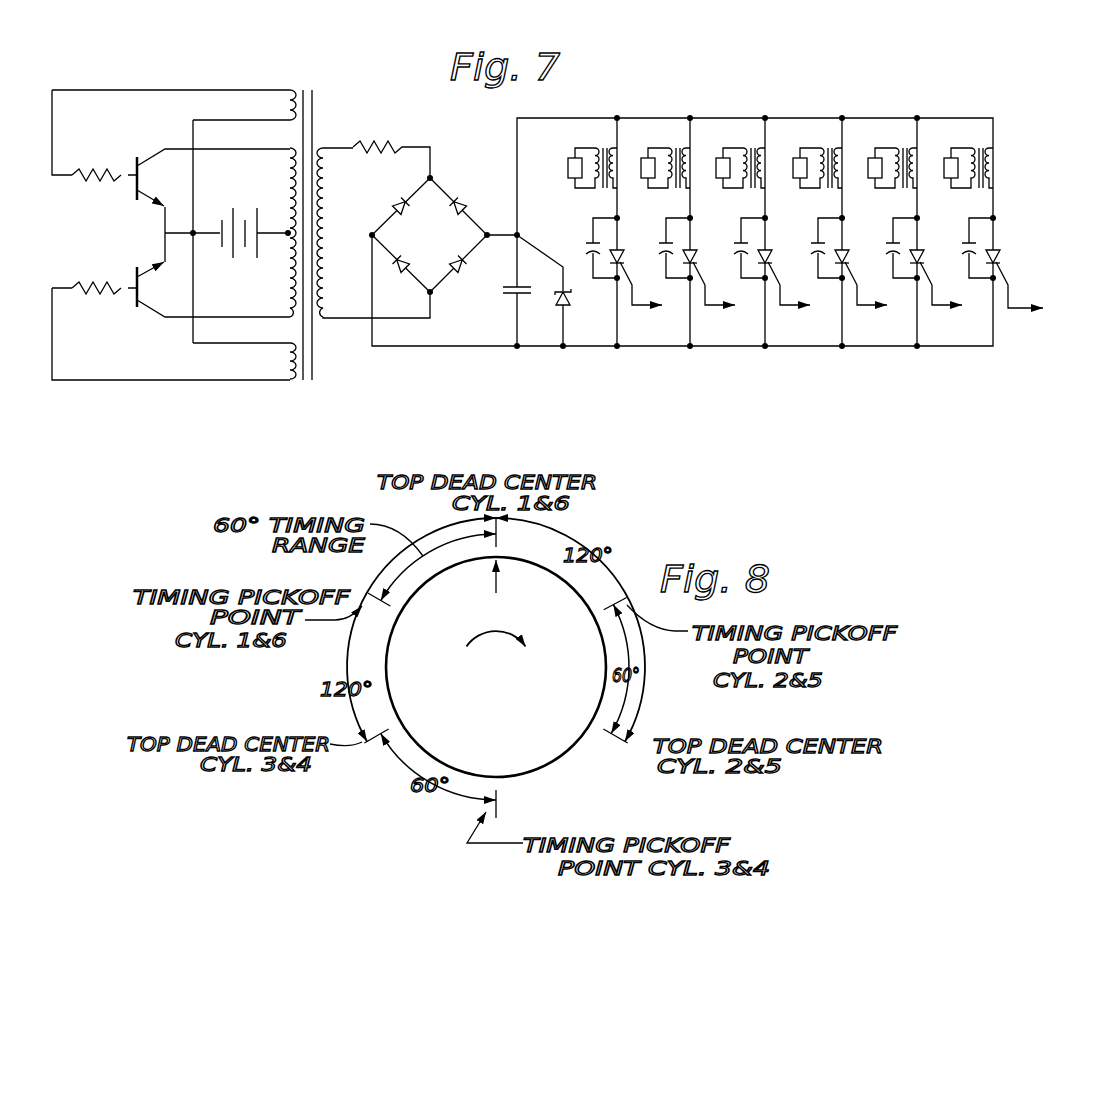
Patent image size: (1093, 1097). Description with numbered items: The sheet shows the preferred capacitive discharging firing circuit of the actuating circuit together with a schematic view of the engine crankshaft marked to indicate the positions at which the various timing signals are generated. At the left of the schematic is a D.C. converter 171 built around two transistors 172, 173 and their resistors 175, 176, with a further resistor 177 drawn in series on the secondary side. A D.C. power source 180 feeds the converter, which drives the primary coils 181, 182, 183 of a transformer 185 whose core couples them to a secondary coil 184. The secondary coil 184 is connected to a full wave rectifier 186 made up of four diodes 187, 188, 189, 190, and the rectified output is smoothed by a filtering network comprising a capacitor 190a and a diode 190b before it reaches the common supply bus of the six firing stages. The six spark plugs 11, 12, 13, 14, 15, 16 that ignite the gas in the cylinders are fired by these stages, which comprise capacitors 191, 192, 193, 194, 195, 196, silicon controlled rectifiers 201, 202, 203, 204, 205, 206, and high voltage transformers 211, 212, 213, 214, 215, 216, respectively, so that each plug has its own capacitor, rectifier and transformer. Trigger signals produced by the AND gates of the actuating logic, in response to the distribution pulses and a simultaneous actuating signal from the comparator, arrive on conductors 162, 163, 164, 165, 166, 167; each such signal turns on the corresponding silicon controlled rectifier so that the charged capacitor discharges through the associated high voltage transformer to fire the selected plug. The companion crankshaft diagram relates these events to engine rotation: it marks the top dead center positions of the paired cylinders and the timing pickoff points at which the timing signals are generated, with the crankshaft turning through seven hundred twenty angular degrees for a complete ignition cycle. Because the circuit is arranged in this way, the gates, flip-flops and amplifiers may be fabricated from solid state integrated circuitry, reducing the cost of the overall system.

The spark plug 11 is at (565, 171).
The spark plug 12 is at (643, 180).
The spark plug 13 is at (718, 180).
The spark plug 14 is at (795, 180).
The spark plug 15 is at (872, 180).
The spark plug 16 is at (948, 180).
The conductor 162 is at (780, 310).
The conductor 163 is at (632, 310).
The conductor 164 is at (932, 310).
The conductor 165 is at (857, 310).
The conductor 166 is at (1040, 305).
The conductor 167 is at (696, 266).
The D.C. converter 171 is at (331, 220).
The transistor 172 is at (133, 162).
The transistor 173 is at (133, 283).
The resistor 175 is at (92, 172).
The resistor 176 is at (108, 300).
The resistor 177 is at (370, 138).
The D.C. power source 180 is at (238, 213).
The primary coil 181 is at (292, 90).
The primary coil 182 is at (290, 147).
The primary coil 183 is at (290, 343).
The secondary coil 184 is at (323, 146).
The transformer 185 is at (321, 329).
The full wave rectifier 186 is at (431, 209).
The diode 187 is at (404, 200).
The diode 188 is at (398, 256).
The diode 189 is at (463, 273).
The diode 190 is at (466, 198).
The capacitor 190a is at (506, 291).
The diode 190b is at (572, 299).
The capacitor 191 is at (586, 248).
The capacitor 192 is at (628, 259).
The capacitor 193 is at (733, 249).
The capacitor 194 is at (810, 249).
The capacitor 195 is at (885, 249).
The capacitor 196 is at (961, 249).
The silicon controlled rectifier 201 is at (658, 249).
The silicon controlled rectifier 202 is at (705, 310).
The silicon controlled rectifier 203 is at (771, 266).
The silicon controlled rectifier 204 is at (848, 266).
The silicon controlled rectifier 205 is at (923, 266).
The silicon controlled rectifier 206 is at (1000, 257).
The high voltage transformer 211 is at (572, 158).
The high voltage transformer 212 is at (660, 170).
The high voltage transformer 213 is at (733, 170).
The high voltage transformer 214 is at (810, 170).
The high voltage transformer 215 is at (886, 170).
The high voltage transformer 216 is at (962, 170).